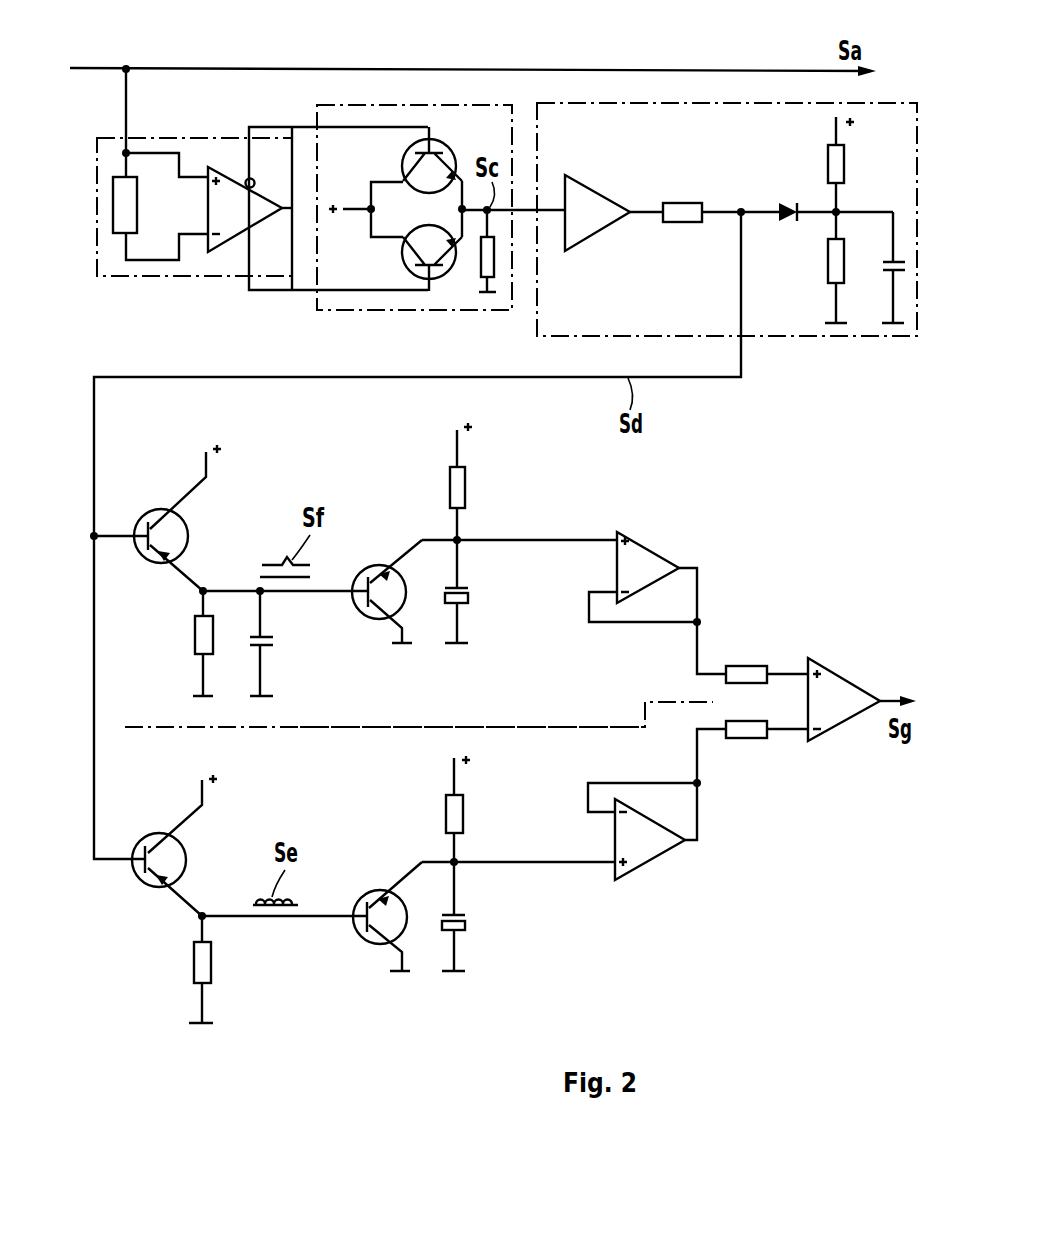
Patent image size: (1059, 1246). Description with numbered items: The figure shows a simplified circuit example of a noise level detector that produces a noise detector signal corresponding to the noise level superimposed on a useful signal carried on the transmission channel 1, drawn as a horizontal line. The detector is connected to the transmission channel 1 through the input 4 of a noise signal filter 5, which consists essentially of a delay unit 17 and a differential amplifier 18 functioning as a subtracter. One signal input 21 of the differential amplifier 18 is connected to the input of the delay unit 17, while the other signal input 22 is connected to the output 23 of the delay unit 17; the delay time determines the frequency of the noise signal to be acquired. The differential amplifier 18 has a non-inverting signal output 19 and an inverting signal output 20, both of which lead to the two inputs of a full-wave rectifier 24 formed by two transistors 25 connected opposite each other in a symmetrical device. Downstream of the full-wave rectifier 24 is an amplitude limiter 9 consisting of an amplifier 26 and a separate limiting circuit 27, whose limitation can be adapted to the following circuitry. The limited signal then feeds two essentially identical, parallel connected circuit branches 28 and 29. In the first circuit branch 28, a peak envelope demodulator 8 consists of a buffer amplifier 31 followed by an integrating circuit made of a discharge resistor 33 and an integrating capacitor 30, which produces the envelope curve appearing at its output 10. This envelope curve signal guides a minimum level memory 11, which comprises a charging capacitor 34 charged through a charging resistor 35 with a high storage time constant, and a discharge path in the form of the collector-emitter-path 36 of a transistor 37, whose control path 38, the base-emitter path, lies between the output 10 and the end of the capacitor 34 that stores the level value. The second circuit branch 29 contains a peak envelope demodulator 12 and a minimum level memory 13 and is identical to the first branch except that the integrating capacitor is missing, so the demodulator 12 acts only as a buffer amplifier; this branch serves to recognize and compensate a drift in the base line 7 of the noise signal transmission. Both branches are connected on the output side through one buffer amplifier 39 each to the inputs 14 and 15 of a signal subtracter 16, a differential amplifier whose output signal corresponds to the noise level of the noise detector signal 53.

The transmission channel 1 is at (455, 66).
The input 4 is at (126, 153).
The noise signal filter 5 is at (138, 278).
The base line 7 is at (297, 580).
The peak envelope demodulator 8 is at (271, 484).
The amplitude limiter 9 is at (786, 337).
The output 10 is at (258, 590).
The minimum level memory 11 is at (408, 487).
The peak envelope demodulator 12 is at (285, 811).
The minimum level memory 13 is at (406, 814).
The input 14 is at (805, 672).
The input 15 is at (806, 733).
The signal subtracter 16 is at (842, 721).
The delay unit 17 is at (117, 205).
The differential amplifier 18 is at (241, 256).
The non-inverting signal output 19 is at (250, 231).
The inverting signal output 20 is at (255, 181).
The signal input 21 is at (207, 175).
The signal input 22 is at (207, 242).
The output 23 is at (122, 237).
The full-wave rectifier 24 is at (370, 310).
The transistors 25 is at (412, 232).
The amplifier 26 is at (598, 197).
The limiting circuit 27 is at (820, 200).
The first circuit branch 28 is at (405, 721).
The second circuit branch 29 is at (405, 766).
The integrating capacitor 30 is at (270, 645).
The buffer amplifier 31 is at (160, 510).
The discharge resistor 33 is at (195, 635).
The charging capacitor 34 is at (470, 598).
The charging resistor 35 is at (465, 485).
The collector-emitter-path 36 is at (398, 585).
The transistor 37 is at (372, 620).
The control path 38 is at (372, 565).
The buffer amplifier 39 is at (655, 548).
The output line 53 is at (880, 698).